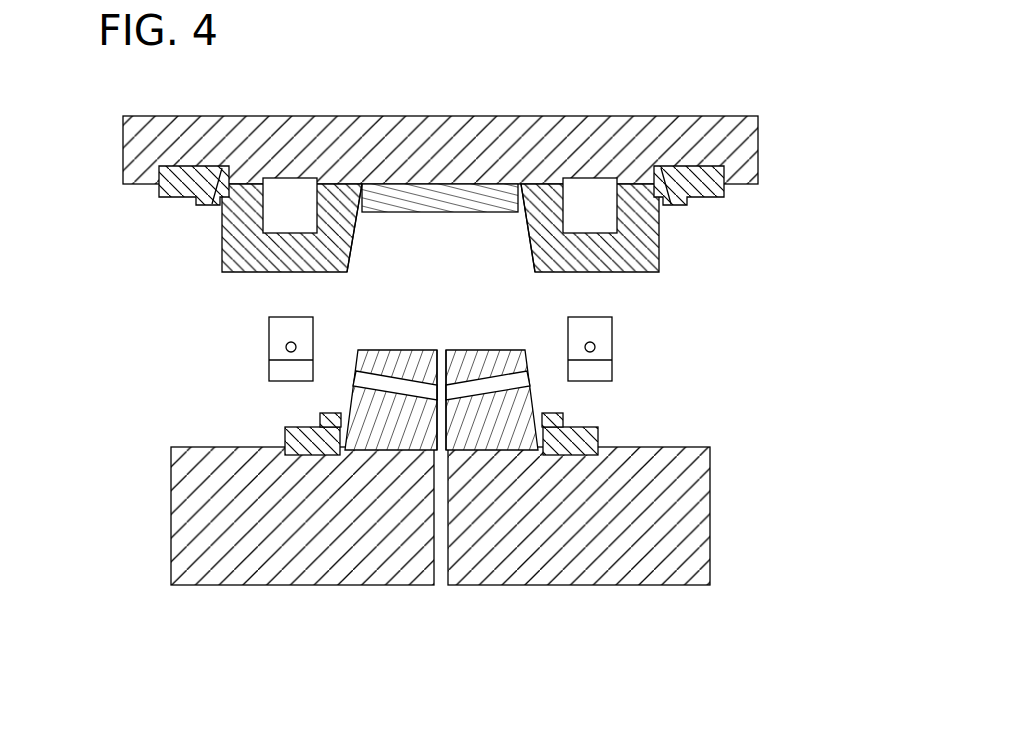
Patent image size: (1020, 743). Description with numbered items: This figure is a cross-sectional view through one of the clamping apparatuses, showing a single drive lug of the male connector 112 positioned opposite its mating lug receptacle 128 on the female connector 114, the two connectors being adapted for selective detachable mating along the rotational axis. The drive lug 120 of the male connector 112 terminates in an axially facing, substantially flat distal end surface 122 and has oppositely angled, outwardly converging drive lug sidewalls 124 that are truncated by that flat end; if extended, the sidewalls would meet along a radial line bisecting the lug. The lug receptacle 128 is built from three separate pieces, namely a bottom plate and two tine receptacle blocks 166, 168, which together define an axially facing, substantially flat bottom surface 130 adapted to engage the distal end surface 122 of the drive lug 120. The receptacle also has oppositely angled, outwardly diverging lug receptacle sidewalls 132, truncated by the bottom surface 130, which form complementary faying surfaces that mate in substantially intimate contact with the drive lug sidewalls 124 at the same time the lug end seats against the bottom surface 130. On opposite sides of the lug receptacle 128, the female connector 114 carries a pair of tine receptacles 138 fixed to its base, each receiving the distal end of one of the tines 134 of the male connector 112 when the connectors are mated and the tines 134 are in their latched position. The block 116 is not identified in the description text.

The male connector 112 is at (453, 494).
The female connector 114 is at (783, 146).
The base block 116 is at (178, 517).
The drive lug 120 is at (398, 430).
The distal end surface 122 is at (464, 350).
The drive lug sidewalls 124 is at (348, 390).
The lug receptacle 128 is at (489, 188).
The bottom surface 130 is at (445, 213).
The lug receptacle sidewalls 132 is at (441, 242).
The tines 134 is at (270, 324).
The tine receptacles 138 is at (295, 197).
The tine receptacle block 166 is at (653, 240).
The tine receptacle block 168 is at (247, 252).